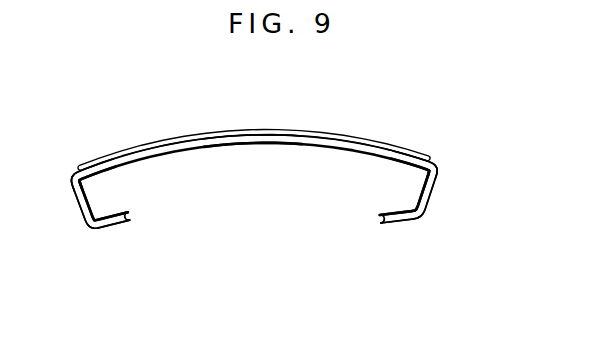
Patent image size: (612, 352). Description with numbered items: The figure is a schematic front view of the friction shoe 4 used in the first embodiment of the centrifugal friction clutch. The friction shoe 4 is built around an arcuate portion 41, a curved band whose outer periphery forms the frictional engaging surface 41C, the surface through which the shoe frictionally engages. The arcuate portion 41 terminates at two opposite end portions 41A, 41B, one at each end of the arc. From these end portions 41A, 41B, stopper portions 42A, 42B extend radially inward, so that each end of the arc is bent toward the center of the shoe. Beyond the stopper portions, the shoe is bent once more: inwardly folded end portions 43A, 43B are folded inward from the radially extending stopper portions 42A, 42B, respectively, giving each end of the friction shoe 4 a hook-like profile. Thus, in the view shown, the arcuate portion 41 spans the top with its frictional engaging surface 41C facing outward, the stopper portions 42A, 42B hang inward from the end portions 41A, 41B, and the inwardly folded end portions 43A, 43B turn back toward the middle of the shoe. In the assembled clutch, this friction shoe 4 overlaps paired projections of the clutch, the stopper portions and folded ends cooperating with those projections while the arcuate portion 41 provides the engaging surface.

The friction shoe 4 is at (158, 152).
The arcuate portion 41 is at (310, 139).
The end portion of the arcuate portion 41A is at (428, 163).
The end portion of the arcuate portion 41B is at (77, 175).
The frictional engaging surface 41C is at (270, 132).
The stopper portion 42A is at (427, 208).
The stopper portion 42B is at (90, 232).
The inwardly folded end portion 43A is at (374, 207).
The inwardly folded end portion 43B is at (137, 212).